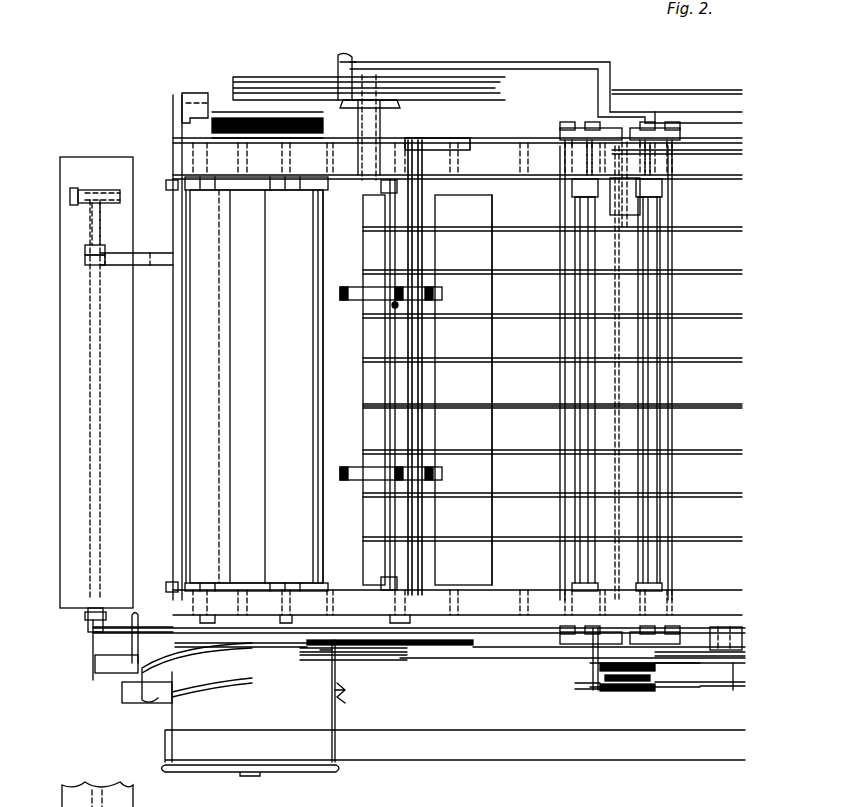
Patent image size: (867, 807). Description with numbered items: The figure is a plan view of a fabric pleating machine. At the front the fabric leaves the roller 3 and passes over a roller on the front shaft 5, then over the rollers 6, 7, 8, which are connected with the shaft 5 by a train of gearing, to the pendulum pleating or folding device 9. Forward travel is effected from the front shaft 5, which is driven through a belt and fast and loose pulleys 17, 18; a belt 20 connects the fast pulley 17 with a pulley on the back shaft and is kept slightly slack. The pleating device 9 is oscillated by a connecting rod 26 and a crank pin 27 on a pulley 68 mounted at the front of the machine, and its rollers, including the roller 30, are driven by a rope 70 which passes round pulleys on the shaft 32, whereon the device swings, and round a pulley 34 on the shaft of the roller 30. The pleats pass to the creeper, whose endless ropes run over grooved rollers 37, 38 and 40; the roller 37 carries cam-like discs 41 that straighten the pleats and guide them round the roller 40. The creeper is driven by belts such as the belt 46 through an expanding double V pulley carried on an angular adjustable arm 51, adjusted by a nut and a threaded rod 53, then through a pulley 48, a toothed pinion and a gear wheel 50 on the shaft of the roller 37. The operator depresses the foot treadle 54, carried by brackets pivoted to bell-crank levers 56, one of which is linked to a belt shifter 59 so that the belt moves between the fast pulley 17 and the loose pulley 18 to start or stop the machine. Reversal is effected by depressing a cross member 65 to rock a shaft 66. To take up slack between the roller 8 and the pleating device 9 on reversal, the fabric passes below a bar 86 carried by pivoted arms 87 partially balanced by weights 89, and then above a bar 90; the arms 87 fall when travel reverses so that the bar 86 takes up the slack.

The roller 3 is at (230, 408).
The front shaft 5 is at (255, 776).
The roller 6 is at (225, 353).
The roller 7 is at (323, 373).
The roller 8 is at (313, 318).
The pendulum pleating or folding device 9 is at (680, 130).
The fast pulley 17 is at (348, 699).
The loose pulley 18 is at (335, 672).
The belt 20 is at (620, 360).
The connecting rod 26 is at (510, 62).
The crank pin 27 is at (352, 57).
The roller 30 is at (618, 346).
The shaft 32 is at (620, 165).
The pulley 34 is at (585, 690).
The roller 37 is at (363, 376).
The roller 38 is at (540, 410).
The roller 40 is at (492, 383).
The cam-like discs 41 is at (355, 300).
The belt 46 is at (540, 658).
The pulley 48 is at (400, 652).
The gear wheel 50 is at (462, 647).
The angular adjustable arm 51 is at (728, 630).
The rod 53 is at (506, 633).
The foot treadle 54 is at (60, 391).
The bell-crank levers 56 is at (95, 212).
The belt shifter 59 is at (160, 703).
The cross member 65 is at (184, 431).
The shaft 66 is at (225, 108).
The pulley 68 is at (270, 77).
The rope 70 is at (739, 688).
The bar 86 is at (385, 244).
The arms 87 is at (348, 195).
The weights 89 is at (168, 185).
The bar 90 is at (418, 244).